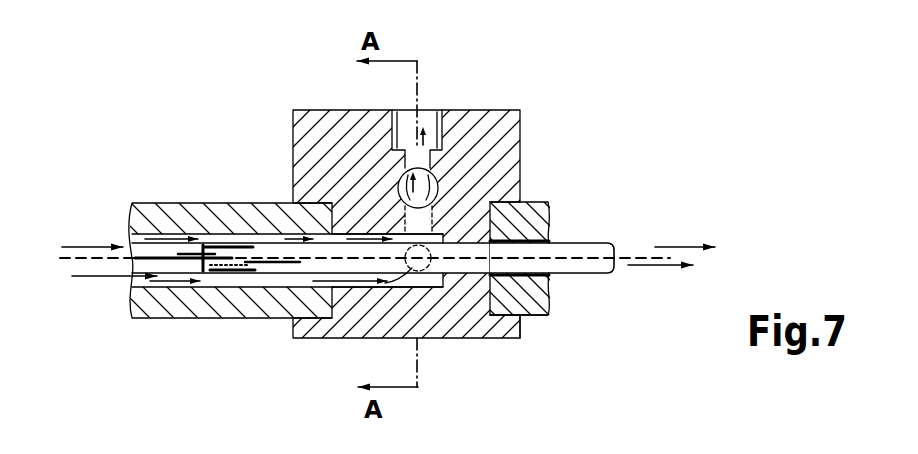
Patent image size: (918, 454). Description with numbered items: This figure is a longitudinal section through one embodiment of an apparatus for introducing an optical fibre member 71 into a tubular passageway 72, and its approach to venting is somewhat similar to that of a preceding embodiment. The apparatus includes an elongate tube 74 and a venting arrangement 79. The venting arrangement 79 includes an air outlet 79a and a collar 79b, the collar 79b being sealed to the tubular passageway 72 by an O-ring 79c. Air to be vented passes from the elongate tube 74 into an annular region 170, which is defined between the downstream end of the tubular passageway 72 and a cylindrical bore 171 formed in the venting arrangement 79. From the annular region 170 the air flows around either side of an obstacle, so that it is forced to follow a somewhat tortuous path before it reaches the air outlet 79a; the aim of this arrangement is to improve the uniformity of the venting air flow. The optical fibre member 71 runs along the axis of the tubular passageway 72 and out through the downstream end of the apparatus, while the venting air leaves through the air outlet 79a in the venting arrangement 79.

The optical fibre member 71 is at (645, 260).
The tubular passageway 72 is at (582, 246).
The elongate tube 74 is at (215, 215).
The venting arrangement 79 is at (513, 102).
The air outlet 79a is at (430, 125).
The collar 79b is at (547, 201).
The O-ring 79c is at (527, 313).
The annular region 170 is at (345, 243).
The cylindrical bore 171 is at (347, 290).